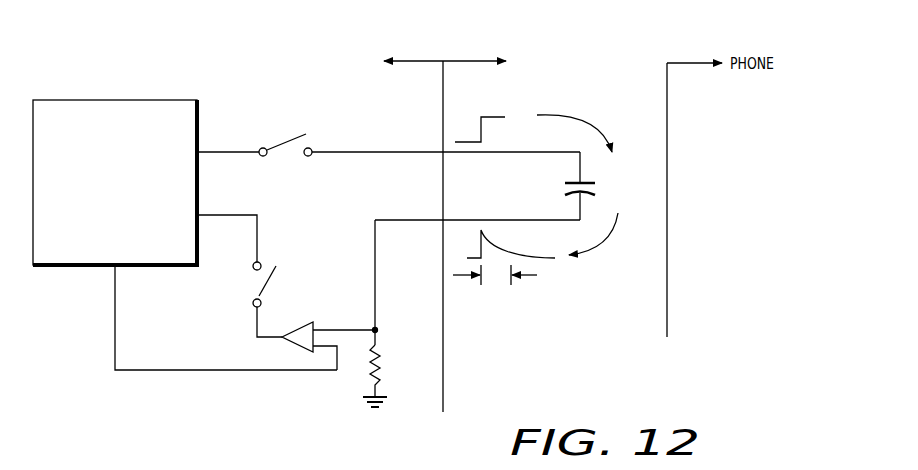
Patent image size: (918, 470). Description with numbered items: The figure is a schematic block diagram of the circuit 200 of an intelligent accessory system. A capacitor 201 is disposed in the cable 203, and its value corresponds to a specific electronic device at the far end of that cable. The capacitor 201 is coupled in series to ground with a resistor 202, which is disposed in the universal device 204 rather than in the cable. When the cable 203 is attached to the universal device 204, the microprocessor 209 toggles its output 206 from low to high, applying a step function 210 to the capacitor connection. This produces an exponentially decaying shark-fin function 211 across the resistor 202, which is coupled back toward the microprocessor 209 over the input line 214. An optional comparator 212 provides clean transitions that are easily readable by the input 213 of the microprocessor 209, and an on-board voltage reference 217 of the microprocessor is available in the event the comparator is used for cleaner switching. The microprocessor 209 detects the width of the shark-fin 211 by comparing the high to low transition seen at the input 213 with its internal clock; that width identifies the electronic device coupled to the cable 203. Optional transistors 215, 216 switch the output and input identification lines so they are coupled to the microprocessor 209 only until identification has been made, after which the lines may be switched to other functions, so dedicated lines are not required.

The circuit 200 is at (630, 393).
The capacitor 201 is at (597, 183).
The resistor 202 is at (398, 350).
The cable 203 is at (567, 57).
The universal device 204 is at (295, 56).
The output 206 is at (200, 151).
The microprocessor 209 is at (95, 99).
The step function 210 is at (491, 116).
The shark-fin function 211 is at (507, 252).
The comparator 212 is at (298, 345).
The input 213 is at (200, 215).
The input line 214 is at (261, 237).
The transistor 215 is at (254, 282).
The transistor 216 is at (290, 154).
The on-board voltage reference 217 is at (109, 271).